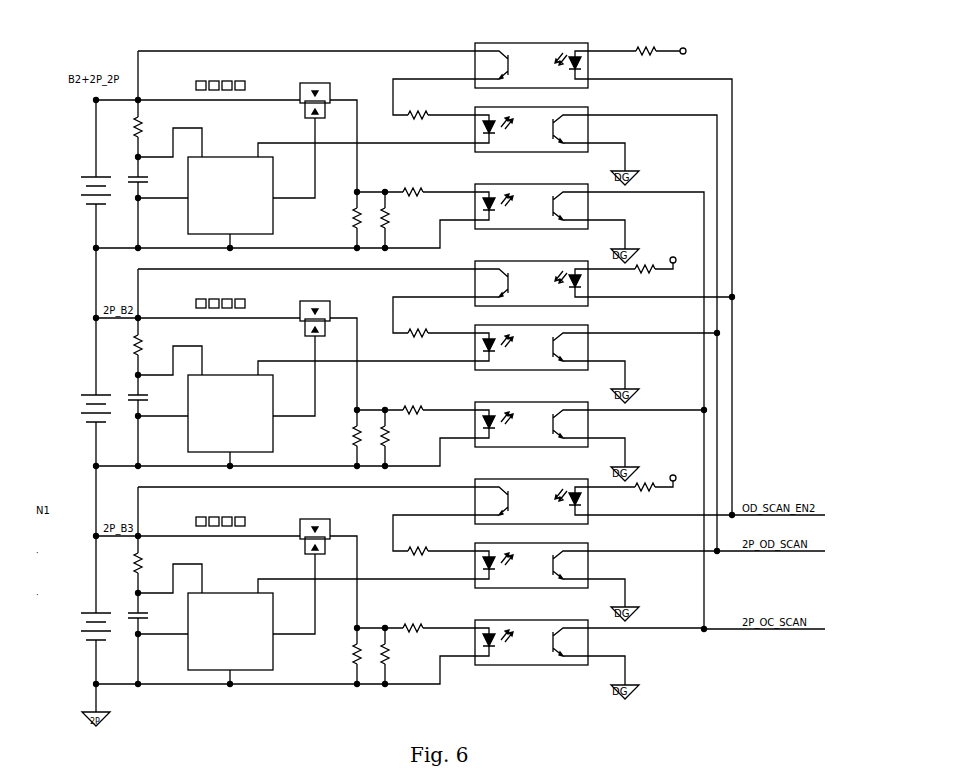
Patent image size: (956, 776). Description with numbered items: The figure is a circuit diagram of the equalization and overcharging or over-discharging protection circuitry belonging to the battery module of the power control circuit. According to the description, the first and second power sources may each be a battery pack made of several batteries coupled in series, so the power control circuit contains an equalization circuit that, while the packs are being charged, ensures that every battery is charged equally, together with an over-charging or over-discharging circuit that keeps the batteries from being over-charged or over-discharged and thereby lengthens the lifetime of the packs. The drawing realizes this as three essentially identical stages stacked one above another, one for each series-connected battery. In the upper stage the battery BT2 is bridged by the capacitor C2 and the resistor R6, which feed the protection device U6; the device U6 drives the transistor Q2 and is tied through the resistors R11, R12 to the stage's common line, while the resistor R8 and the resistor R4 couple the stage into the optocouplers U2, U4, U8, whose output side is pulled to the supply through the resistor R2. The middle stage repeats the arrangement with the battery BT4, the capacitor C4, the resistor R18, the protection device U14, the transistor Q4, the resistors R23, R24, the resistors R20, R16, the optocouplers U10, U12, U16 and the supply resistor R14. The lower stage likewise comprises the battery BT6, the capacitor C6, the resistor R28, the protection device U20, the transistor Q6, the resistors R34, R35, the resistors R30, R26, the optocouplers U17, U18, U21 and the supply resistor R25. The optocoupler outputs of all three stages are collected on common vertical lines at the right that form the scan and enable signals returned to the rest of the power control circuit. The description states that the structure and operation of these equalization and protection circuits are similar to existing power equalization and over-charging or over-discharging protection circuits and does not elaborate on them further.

The resistor 471 R6 is at (127, 130).
The capacitor 104P C2 is at (129, 182).
The battery LI-4.2V BT2 is at (75, 190).
The protection IC S8241ACL U6 is at (237, 194).
The MOSFET AO3401 Q2 is at (329, 103).
The resistor 75R R11 is at (344, 216).
The resistor 75R R12 is at (374, 216).
The resistor 152 R8 is at (411, 192).
The resistor 152 R4 is at (416, 116).
The optocoupler EL357 U2 is at (526, 63).
The optocoupler EL357 U4 is at (526, 127).
The optocoupler EL357 U8 is at (526, 203).
The resistor 152 R2 is at (652, 50).
The resistor 471 R18 is at (127, 348).
The capacitor 104P C4 is at (129, 400).
The battery LI-4.2V BT4 is at (75, 408).
The protection IC S8241ACL U14 is at (240, 412).
The MOSFET AO3401 Q4 is at (329, 321).
The resistor 75R R23 is at (344, 434).
The resistor 75R R24 is at (374, 434).
The resistor 152 R20 is at (411, 410).
The resistor 152 R16 is at (416, 334).
The optocoupler EL357 U10 is at (526, 281).
The optocoupler EL357 U12 is at (526, 345).
The optocoupler EL357 U16 is at (526, 421).
The resistor 152 R14 is at (636, 264).
The resistor 471 R28 is at (127, 566).
The capacitor 104P C6 is at (129, 618).
The battery LI-4.2V BT6 is at (75, 626).
The protection IC S8241ACL U20 is at (240, 630).
The MOSFET AO3401 Q6 is at (329, 539).
The resistor 75R R34 is at (344, 652).
The resistor 75R R35 is at (374, 652).
The resistor 152 R30 is at (411, 628).
The resistor 152 R26 is at (416, 552).
The optocoupler EL357 U17 is at (526, 499).
The optocoupler EL357 U18 is at (526, 563).
The optocoupler EL357 U21 is at (526, 639).
The resistor 152 R25 is at (636, 482).